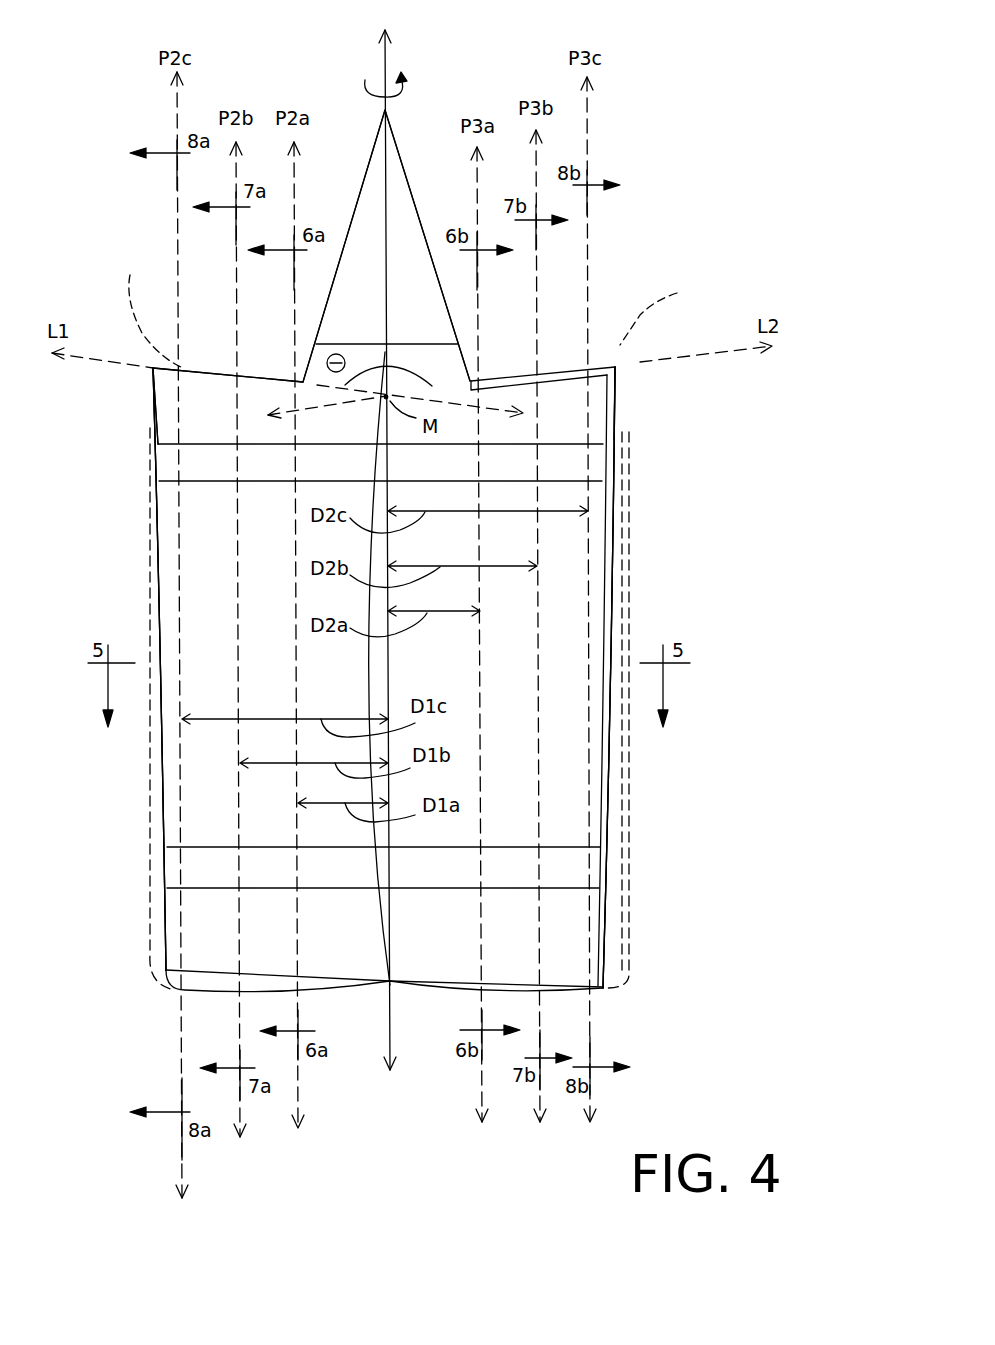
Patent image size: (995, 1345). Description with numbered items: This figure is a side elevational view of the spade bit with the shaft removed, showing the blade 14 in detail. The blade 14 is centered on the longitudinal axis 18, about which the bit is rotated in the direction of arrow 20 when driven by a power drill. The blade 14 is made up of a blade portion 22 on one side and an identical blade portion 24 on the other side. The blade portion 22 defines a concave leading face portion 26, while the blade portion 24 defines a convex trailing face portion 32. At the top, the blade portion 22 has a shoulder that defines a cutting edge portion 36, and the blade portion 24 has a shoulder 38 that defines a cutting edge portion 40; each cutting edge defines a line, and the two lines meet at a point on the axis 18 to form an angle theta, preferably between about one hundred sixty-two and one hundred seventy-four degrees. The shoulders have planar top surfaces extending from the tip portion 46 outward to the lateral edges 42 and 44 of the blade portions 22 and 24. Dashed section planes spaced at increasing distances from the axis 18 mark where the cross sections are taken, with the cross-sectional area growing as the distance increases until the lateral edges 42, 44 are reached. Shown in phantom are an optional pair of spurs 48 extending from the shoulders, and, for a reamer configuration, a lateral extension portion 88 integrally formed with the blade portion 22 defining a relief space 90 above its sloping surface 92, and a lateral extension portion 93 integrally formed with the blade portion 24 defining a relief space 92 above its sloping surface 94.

The blade 14 is at (665, 545).
The axis 18 is at (388, 62).
The arrow 20 is at (400, 91).
The blade portion 22 is at (128, 568).
The blade portion 24 is at (682, 793).
The leading face portion 26 is at (197, 860).
The trailing face portion 32 is at (577, 461).
The cutting edge portion 36 is at (213, 365).
The shoulder 38 is at (487, 383).
The cutting edge portion 40 is at (548, 373).
The lateral edge 42 is at (160, 500).
The lateral edge 44 is at (612, 600).
The tip portion 46 is at (371, 195).
The spurs 48 is at (414, 308).
The lateral extension portion 88 is at (150, 605).
The relief space 90 is at (147, 402).
The sloping surface 92 is at (150, 428).
The lateral extension portion 93 is at (632, 830).
The sloping surface 94 is at (620, 440).